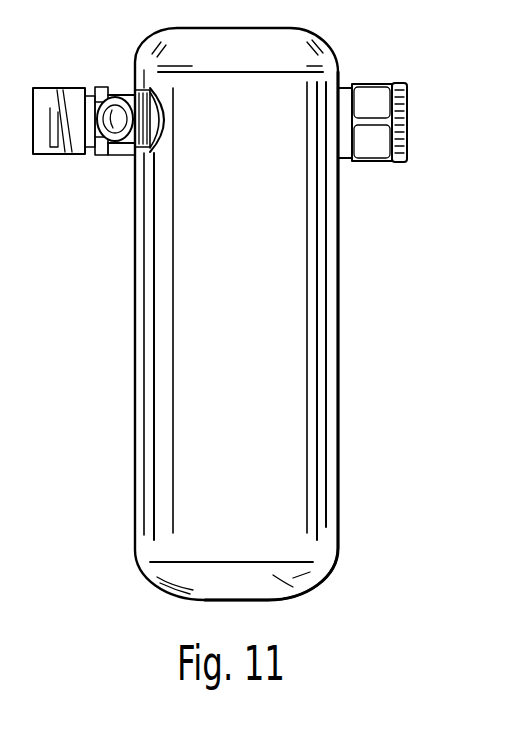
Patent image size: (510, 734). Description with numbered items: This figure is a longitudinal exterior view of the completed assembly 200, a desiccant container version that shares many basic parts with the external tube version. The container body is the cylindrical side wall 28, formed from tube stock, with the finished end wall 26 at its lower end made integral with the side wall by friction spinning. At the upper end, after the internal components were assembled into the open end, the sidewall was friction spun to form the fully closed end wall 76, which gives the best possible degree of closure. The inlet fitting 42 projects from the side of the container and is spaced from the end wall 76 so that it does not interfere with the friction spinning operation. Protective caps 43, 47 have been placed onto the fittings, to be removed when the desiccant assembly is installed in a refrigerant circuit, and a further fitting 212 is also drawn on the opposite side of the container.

The completed assembly 200 is at (157, 587).
The side wall 28 is at (283, 320).
The end wall 76 is at (292, 45).
The end wall 26 is at (275, 575).
The inlet tube fitting 212 is at (77, 137).
The protective cap 47 is at (152, 130).
The inlet fitting 42 is at (373, 143).
The protective cap 43 is at (408, 108).